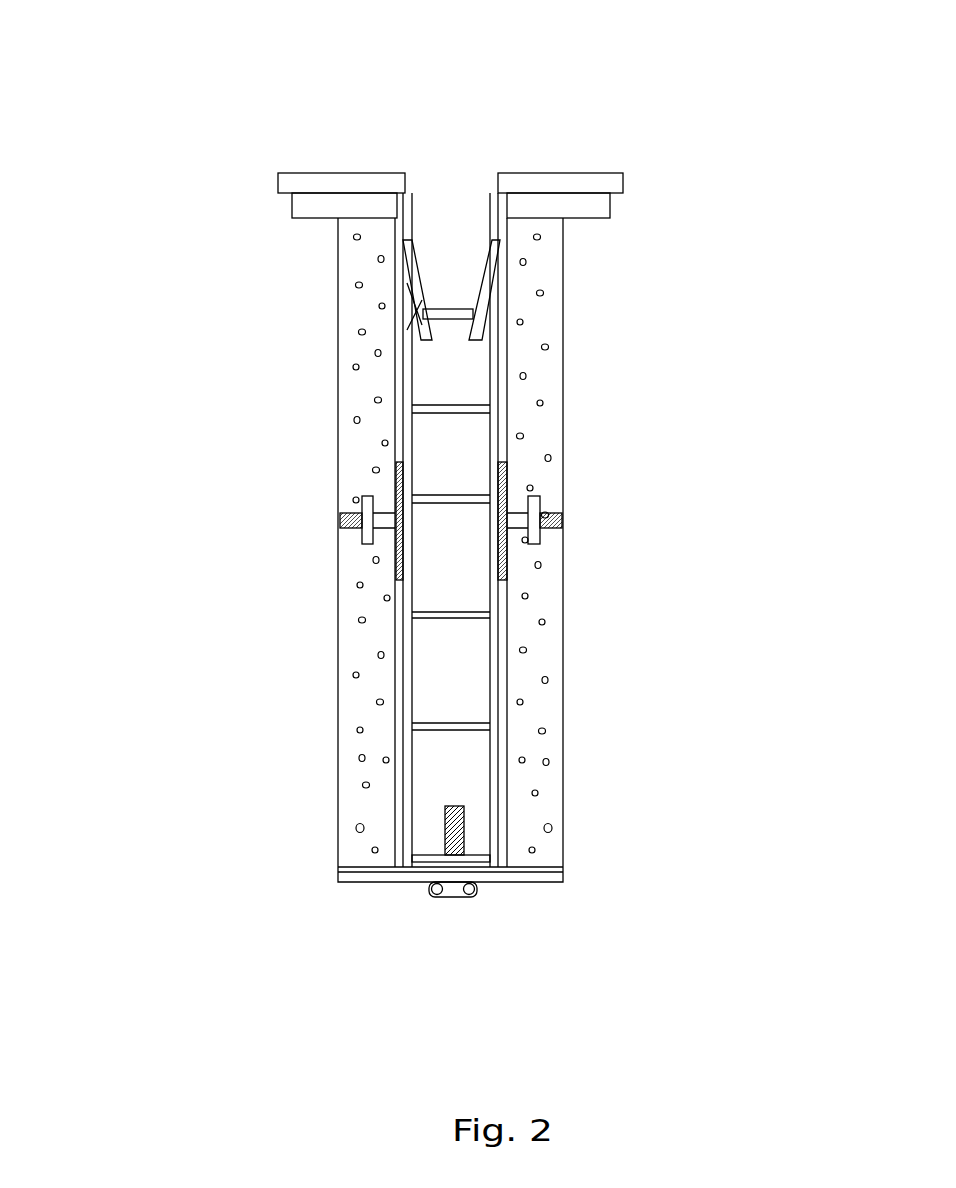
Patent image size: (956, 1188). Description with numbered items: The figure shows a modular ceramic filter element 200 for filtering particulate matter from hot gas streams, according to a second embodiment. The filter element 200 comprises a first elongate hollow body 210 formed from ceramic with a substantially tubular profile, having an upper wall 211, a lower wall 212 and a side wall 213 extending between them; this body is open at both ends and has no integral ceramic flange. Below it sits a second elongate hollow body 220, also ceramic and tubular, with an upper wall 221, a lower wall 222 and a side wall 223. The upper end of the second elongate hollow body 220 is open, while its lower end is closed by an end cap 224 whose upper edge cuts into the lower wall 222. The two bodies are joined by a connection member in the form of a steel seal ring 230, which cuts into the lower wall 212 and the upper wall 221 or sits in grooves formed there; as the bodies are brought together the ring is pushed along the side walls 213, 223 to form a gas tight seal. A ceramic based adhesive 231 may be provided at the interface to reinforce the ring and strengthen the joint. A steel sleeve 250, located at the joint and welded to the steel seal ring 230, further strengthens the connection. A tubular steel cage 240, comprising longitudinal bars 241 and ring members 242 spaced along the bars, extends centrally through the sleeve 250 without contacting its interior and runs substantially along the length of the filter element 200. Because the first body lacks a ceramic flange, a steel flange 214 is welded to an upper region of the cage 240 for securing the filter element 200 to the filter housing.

The modular filter element 200 is at (192, 124).
The first elongate hollow body 210 is at (612, 409).
The upper wall 211 is at (587, 206).
The lower wall 212 is at (378, 494).
The side wall 213 is at (542, 357).
The steel flange 214 is at (553, 186).
The second elongate hollow body 220 is at (614, 729).
The upper wall 221 is at (559, 541).
The lower wall 222 is at (556, 858).
The side wall 223 is at (340, 724).
The end cap 224 is at (417, 877).
The steel seal ring 230 is at (541, 503).
The ceramic based adhesive 231 is at (341, 528).
The tubular steel cage 240 is at (457, 286).
The longitudinal bars 241 is at (425, 306).
The ring members 242 is at (466, 306).
The steel sleeve 250 is at (397, 465).